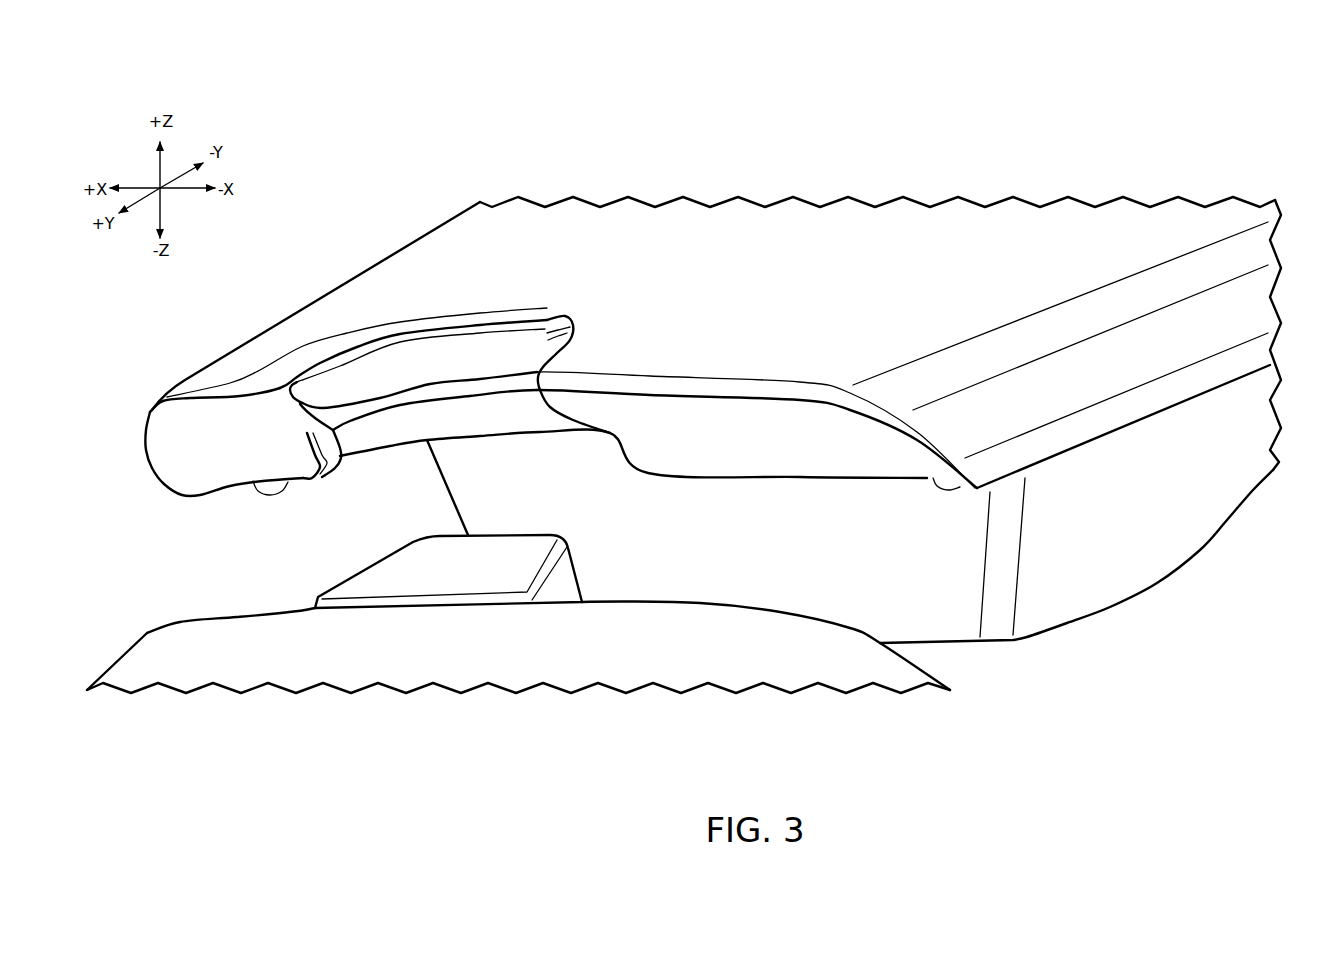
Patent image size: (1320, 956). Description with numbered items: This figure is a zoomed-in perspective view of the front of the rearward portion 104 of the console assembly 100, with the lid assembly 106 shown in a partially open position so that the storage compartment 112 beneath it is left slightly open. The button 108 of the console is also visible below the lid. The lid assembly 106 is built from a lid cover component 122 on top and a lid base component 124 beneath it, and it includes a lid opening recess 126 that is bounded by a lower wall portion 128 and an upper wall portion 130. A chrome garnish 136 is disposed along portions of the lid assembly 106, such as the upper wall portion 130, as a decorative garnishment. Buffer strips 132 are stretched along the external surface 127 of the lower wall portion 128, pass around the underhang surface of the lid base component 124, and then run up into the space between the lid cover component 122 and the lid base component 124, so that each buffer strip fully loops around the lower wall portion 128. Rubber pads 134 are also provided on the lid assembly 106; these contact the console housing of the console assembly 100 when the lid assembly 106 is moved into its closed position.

The console assembly 100 is at (279, 111).
The rearward portion 104 is at (518, 629).
The lid assembly 106 is at (716, 389).
The button 108 is at (448, 571).
The storage compartment 112 is at (779, 545).
The lid cover component 122 is at (222, 364).
The lid base component 124 is at (230, 473).
The lid opening recess 126 is at (561, 410).
The external surface 127 is at (471, 462).
The lower wall portion 128 is at (542, 425).
The upper wall portion 130 is at (440, 390).
The buffer strips 132 is at (313, 440).
The rubber pads 134 is at (270, 486).
The chrome garnish 136 is at (547, 340).